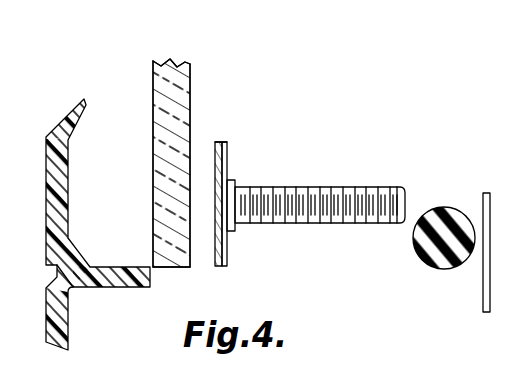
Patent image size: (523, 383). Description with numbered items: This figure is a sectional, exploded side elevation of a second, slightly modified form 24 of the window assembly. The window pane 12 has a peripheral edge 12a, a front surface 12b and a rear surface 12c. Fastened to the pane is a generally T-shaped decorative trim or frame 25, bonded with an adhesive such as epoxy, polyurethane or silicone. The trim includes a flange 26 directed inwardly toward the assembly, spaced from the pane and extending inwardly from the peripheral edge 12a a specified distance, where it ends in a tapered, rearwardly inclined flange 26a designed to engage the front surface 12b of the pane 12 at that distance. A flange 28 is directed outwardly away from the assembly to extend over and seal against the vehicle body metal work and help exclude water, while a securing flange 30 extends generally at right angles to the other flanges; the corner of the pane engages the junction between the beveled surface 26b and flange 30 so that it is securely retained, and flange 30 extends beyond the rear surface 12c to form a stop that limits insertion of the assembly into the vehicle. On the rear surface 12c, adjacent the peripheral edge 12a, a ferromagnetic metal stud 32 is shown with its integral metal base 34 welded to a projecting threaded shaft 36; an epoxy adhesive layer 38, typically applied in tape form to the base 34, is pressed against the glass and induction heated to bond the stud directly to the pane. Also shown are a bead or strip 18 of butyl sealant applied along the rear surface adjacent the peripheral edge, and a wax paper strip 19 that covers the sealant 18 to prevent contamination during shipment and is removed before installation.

The window pane 12 is at (184, 158).
The peripheral edge 12a is at (172, 267).
The front surface 12b is at (153, 88).
The rear surface 12c is at (190, 95).
The modified form of the invention 24 is at (157, 57).
The decorative trim or frame 25 is at (82, 207).
The flange 26 is at (68, 190).
The tapered, rearwardly inclined flange 26a is at (78, 100).
The beveled surface 26b is at (86, 267).
The flange 28 is at (68, 318).
The securing flange 30 is at (114, 287).
The metal stud 32 is at (400, 187).
The metal base 34 is at (242, 182).
The threaded shaft 36 is at (306, 187).
The epoxy adhesive layer 38 is at (217, 142).
The bead or strip of butyl sealant 18 is at (433, 243).
The wax paper strip 19 is at (483, 289).